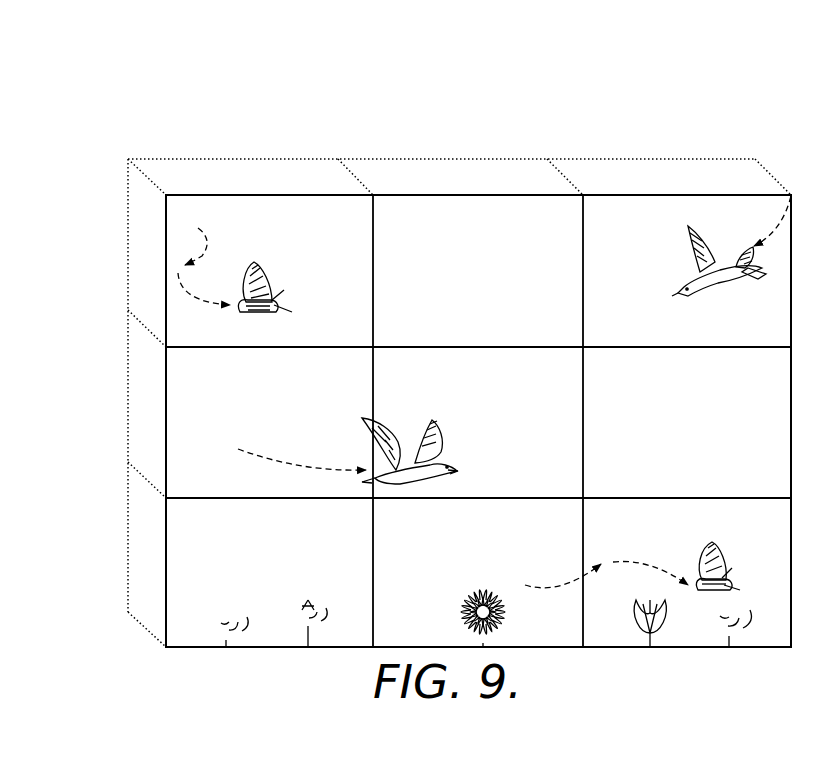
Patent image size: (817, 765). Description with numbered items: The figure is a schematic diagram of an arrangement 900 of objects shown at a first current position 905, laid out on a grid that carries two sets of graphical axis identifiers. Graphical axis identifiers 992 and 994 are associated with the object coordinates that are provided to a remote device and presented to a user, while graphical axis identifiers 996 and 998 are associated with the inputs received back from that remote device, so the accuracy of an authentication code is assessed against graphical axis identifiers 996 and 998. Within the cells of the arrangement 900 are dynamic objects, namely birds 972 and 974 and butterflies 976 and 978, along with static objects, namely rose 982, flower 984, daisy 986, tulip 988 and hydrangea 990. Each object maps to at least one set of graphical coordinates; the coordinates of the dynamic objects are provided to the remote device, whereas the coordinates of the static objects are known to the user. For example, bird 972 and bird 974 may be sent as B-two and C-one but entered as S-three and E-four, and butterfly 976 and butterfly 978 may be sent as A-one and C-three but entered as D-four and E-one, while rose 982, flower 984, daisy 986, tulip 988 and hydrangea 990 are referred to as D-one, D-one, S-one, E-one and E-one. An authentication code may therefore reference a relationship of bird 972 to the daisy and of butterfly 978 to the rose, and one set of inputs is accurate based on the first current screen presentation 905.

The arrangement 900 is at (269, 98).
The first current position 905 is at (697, 195).
The bird 972 is at (443, 425).
The bird 974 is at (730, 287).
The butterfly 976 is at (272, 288).
The butterfly 978 is at (720, 541).
The rose 982 is at (227, 594).
The flower 984 is at (309, 586).
The daisy 986 is at (455, 608).
The tulip 988 is at (636, 612).
The hydrangea 990 is at (742, 600).
The graphical axis identifier 992 is at (168, 211).
The graphical axis identifier 994 is at (170, 238).
The graphical axis identifier 996 is at (665, 170).
The graphical axis identifier 998 is at (141, 265).